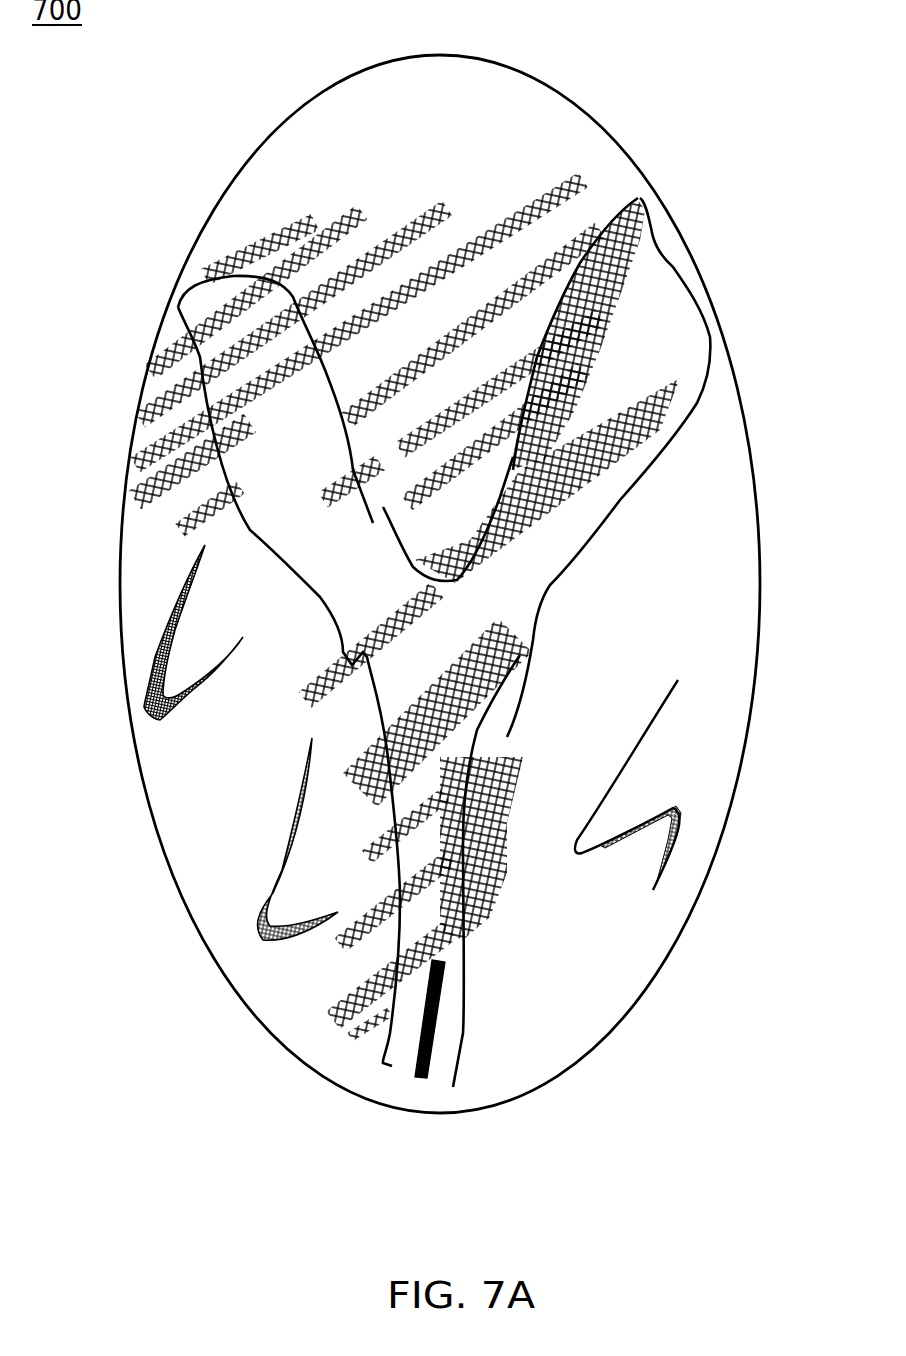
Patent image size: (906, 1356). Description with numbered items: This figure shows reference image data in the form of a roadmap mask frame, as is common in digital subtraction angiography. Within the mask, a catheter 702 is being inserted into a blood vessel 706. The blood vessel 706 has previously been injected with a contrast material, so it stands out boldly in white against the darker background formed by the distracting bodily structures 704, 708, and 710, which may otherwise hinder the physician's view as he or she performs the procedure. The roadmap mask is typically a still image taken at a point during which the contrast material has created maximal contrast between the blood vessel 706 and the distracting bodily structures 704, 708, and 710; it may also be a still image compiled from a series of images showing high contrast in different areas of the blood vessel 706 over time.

The catheter 702 is at (433, 1043).
The distracting bodily structure 704 is at (673, 807).
The blood vessel 706 is at (562, 570).
The distracting bodily structure 708 is at (250, 918).
The distracting bodily structure 710 is at (147, 673).